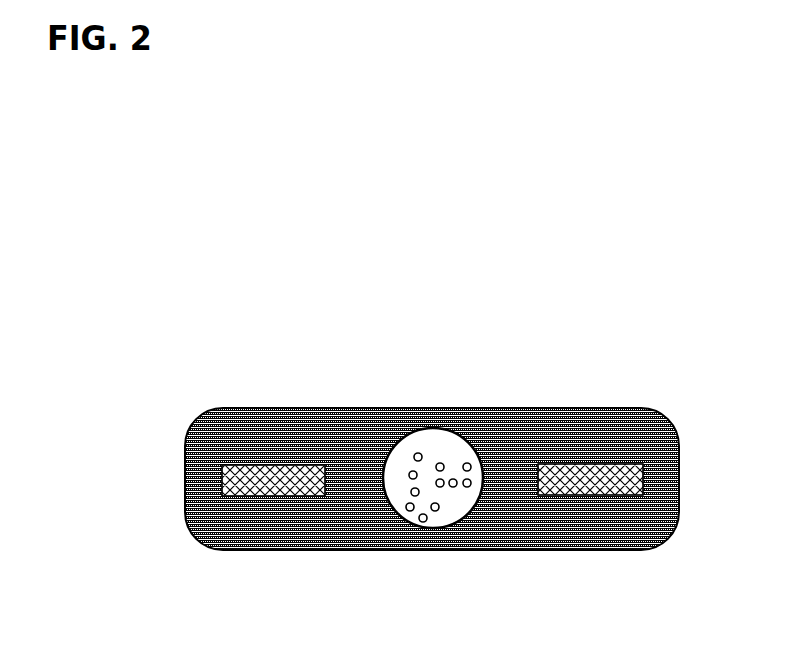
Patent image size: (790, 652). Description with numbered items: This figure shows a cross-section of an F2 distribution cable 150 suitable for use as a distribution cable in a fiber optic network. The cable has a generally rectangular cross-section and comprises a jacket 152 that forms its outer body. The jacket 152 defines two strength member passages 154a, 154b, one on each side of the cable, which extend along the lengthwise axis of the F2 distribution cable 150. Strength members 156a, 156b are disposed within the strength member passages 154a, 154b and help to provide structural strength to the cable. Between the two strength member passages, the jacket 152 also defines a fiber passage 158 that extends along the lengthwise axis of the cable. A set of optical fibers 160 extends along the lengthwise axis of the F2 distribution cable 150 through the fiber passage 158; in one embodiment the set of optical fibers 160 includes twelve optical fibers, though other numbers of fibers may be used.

The F2 distribution cable 150 is at (436, 414).
The jacket 152 is at (593, 408).
The strength member passage 154a is at (253, 463).
The strength member passage 154b is at (560, 465).
The strength member 156a is at (256, 490).
The strength member 156b is at (575, 497).
The fiber passage 158 is at (413, 428).
The set of optical fibers 160 is at (407, 503).